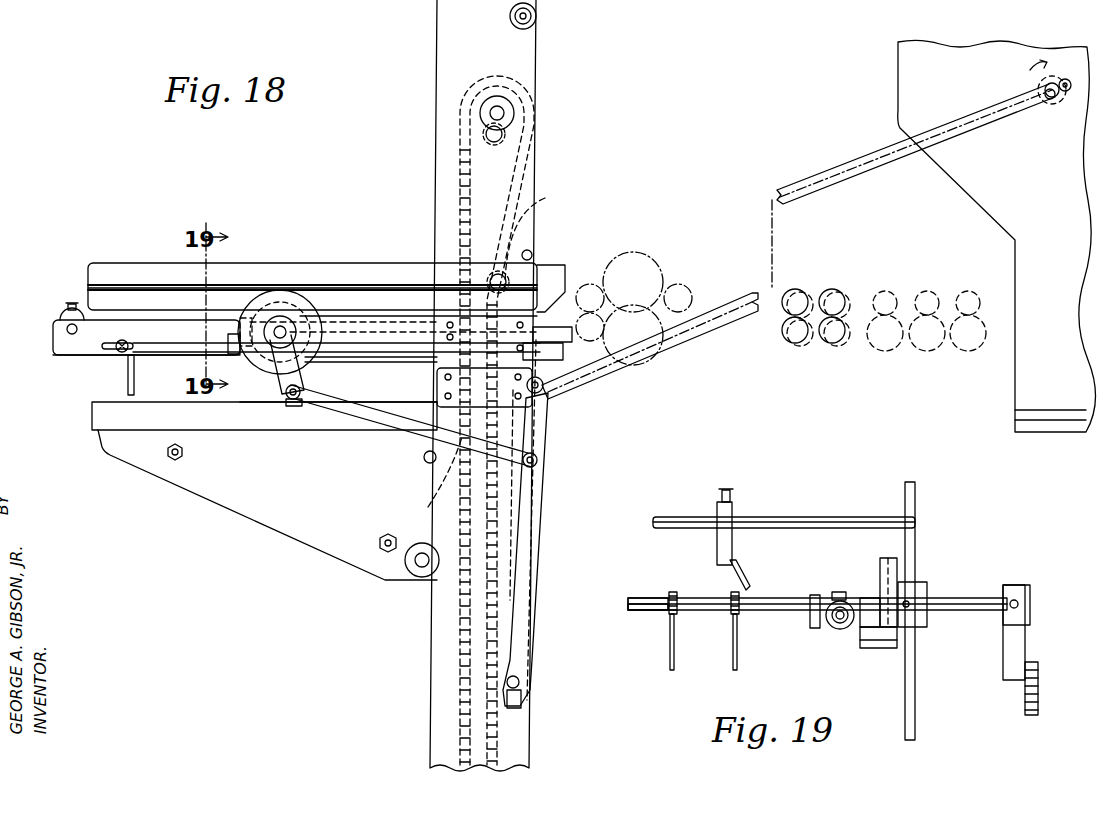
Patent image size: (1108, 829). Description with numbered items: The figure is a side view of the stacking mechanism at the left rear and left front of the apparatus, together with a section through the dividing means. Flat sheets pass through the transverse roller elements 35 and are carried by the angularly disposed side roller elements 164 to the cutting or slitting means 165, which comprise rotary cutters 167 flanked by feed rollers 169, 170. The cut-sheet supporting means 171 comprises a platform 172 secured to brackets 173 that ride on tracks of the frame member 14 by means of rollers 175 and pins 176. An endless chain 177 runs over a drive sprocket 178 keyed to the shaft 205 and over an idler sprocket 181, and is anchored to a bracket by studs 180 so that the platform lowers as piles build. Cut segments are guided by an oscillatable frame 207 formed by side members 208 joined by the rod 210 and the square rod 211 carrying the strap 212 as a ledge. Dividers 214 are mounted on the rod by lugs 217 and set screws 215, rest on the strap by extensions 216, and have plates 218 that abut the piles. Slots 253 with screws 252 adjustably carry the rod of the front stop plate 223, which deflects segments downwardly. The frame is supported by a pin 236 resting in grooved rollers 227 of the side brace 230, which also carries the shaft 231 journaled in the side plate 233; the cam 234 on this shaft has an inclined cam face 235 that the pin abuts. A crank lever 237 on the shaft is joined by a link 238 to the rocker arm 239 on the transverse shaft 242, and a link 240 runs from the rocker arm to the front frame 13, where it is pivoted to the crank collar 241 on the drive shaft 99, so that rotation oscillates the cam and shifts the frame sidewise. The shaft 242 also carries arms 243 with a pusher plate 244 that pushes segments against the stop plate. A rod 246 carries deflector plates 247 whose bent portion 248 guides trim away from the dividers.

In FIG. 18, the side frame 13 is at (905, 67).
In FIG. 18, the frame member 14 is at (445, 44).
In FIG. 19, the frame member 14 is at (915, 494).
In FIG. 18, the transverse roller elements 35 is at (890, 352).
In FIG. 18, the drive shaft 99 is at (1038, 84).
In FIG. 18, the side roller elements 164 is at (800, 344).
In FIG. 18, the cutting or slitting means 165 is at (650, 239).
In FIG. 18, the rotary cutters 167 is at (660, 262).
In FIG. 18, the roller 169 is at (690, 290).
In FIG. 18, the roller 170 is at (590, 282).
In FIG. 18, the cut-sheet supporting means 171 is at (186, 510).
In FIG. 18, the platform 172 is at (100, 412).
In FIG. 18, the brackets 173 is at (275, 520).
In FIG. 18, the rollers 175 is at (416, 577).
In FIG. 18, the pins 176 is at (425, 462).
In FIG. 18, the endless chain 177 is at (518, 182).
In FIG. 18, the drive sprocket 178 is at (472, 147).
In FIG. 18, the studs 180 is at (426, 507).
In FIG. 18, the idler sprocket 181 is at (548, 203).
In FIG. 18, the shaft 205 is at (500, 113).
In FIG. 18, the oscillatable frame 207 is at (46, 346).
In FIG. 18, the side members 208 is at (80, 352).
In FIG. 19, the side members 208 is at (820, 592).
In FIG. 18, the rod 210 is at (64, 327).
In FIG. 19, the square rod 211 is at (650, 596).
In FIG. 18, the strap 212 is at (558, 321).
In FIG. 19, the strap 212 is at (650, 612).
In FIG. 19, the dividers 214 is at (676, 640).
In FIG. 18, the set screws 215 is at (72, 300).
In FIG. 19, the extensions 216 is at (728, 597).
In FIG. 18, the lugs 217 is at (70, 314).
In FIG. 18, the plates 218 is at (398, 387).
In FIG. 19, the plates 218 is at (738, 652).
In FIG. 18, the front stop plate 223 is at (128, 388).
In FIG. 18, the grooved rollers 227 is at (235, 355).
In FIG. 19, the grooved rollers 227 is at (850, 630).
In FIG. 19, the side brace 230 is at (846, 592).
In FIG. 18, the shaft 231 is at (284, 328).
In FIG. 19, the shaft 231 is at (945, 612).
In FIG. 18, the side plate 233 is at (380, 324).
In FIG. 19, the side plate 233 is at (928, 586).
In FIG. 18, the cam 234 is at (272, 290).
In FIG. 19, the cam 234 is at (872, 648).
In FIG. 19, the cam face 235 is at (880, 566).
In FIG. 18, the pin 236 is at (240, 332).
In FIG. 19, the pin 236 is at (865, 640).
In FIG. 18, the crank lever 237 is at (290, 405).
In FIG. 19, the crank lever 237 is at (1005, 648).
In FIG. 18, the link 238 is at (378, 420).
In FIG. 19, the link 238 is at (1025, 703).
In FIG. 18, the rocker arm 239 is at (542, 500).
In FIG. 18, the link 240 is at (722, 327).
In FIG. 18, the crank collar 241 is at (1062, 104).
In FIG. 18, the transverse shaft 242 is at (520, 682).
In FIG. 18, the arms 243 is at (531, 537).
In FIG. 18, the pusher plate 244 is at (560, 352).
In FIG. 18, the rod 246 is at (532, 256).
In FIG. 19, the rod 246 is at (793, 517).
In FIG. 18, the deflector plates 247 is at (112, 270).
In FIG. 19, the deflector plates 247 is at (738, 563).
In FIG. 18, the bent portion 248 is at (147, 292).
In FIG. 19, the bent portion 248 is at (745, 584).
In FIG. 18, the screws 252 is at (120, 354).
In FIG. 18, the slots 253 is at (160, 352).